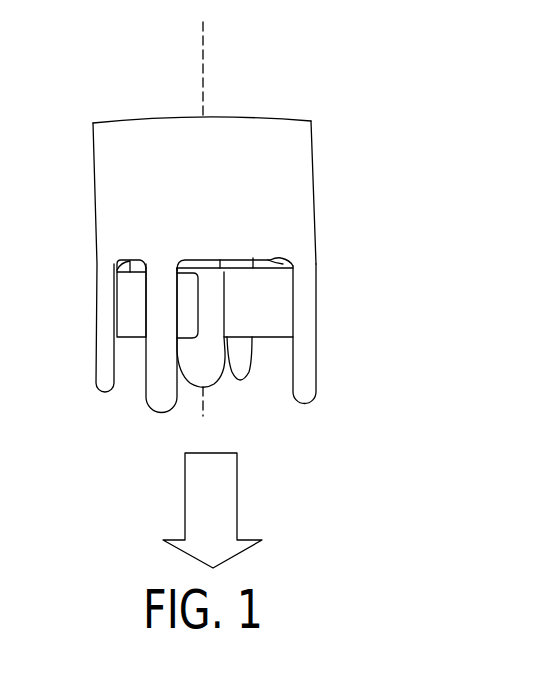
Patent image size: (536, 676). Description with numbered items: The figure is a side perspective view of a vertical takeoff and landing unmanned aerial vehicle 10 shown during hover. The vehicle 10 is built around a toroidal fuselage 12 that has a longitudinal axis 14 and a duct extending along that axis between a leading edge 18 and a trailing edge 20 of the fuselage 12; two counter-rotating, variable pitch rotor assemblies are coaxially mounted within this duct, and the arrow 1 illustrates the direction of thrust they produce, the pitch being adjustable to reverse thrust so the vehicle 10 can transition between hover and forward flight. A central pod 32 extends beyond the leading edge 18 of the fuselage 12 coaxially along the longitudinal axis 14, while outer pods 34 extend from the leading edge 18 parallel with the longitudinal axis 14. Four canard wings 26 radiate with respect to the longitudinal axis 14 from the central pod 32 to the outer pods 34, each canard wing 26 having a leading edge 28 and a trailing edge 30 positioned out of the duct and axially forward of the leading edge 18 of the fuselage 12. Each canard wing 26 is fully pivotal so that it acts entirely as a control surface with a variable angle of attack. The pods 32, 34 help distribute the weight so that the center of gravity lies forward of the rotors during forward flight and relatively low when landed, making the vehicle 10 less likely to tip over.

The arrow indicating direction of thrust 1 is at (185, 470).
The aerial vehicle 10 is at (413, 70).
The toroidal fuselage 12 is at (313, 128).
The longitudinal axis 14 is at (202, 32).
The leading edge of the fuselage 18 is at (293, 265).
The trailing edge of the fuselage 20 is at (267, 117).
The canard wing 26 is at (262, 325).
The leading edge of the canard wing 28 is at (123, 328).
The trailing edge of the canard wing 30 is at (117, 264).
The central pod 32 is at (218, 387).
The outer pods 34 is at (307, 355).